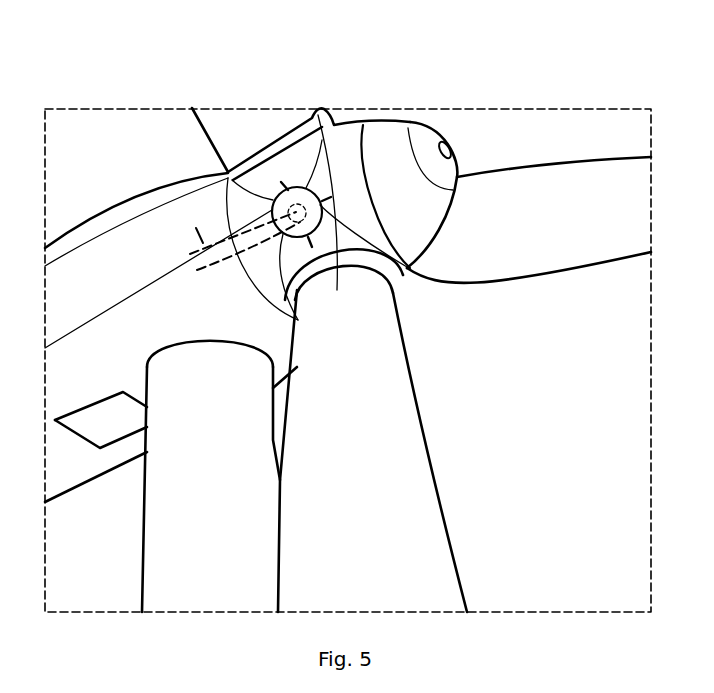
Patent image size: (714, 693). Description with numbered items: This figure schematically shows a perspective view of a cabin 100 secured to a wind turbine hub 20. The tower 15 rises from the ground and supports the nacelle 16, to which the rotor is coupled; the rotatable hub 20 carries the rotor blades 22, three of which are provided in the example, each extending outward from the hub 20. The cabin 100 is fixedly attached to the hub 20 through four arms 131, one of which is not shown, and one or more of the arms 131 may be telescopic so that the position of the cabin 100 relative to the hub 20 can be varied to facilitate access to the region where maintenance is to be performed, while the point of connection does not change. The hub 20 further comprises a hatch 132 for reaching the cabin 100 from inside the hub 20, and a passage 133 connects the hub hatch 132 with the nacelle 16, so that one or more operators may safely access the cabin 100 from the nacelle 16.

The tower 15 is at (145, 502).
The nacelle 16 is at (100, 217).
The hub 20 is at (350, 124).
The rotor blade 22 is at (198, 127).
The cabin 100 is at (330, 262).
The arm 131 is at (320, 238).
The hatch 132 is at (230, 182).
The passage 133 is at (203, 245).